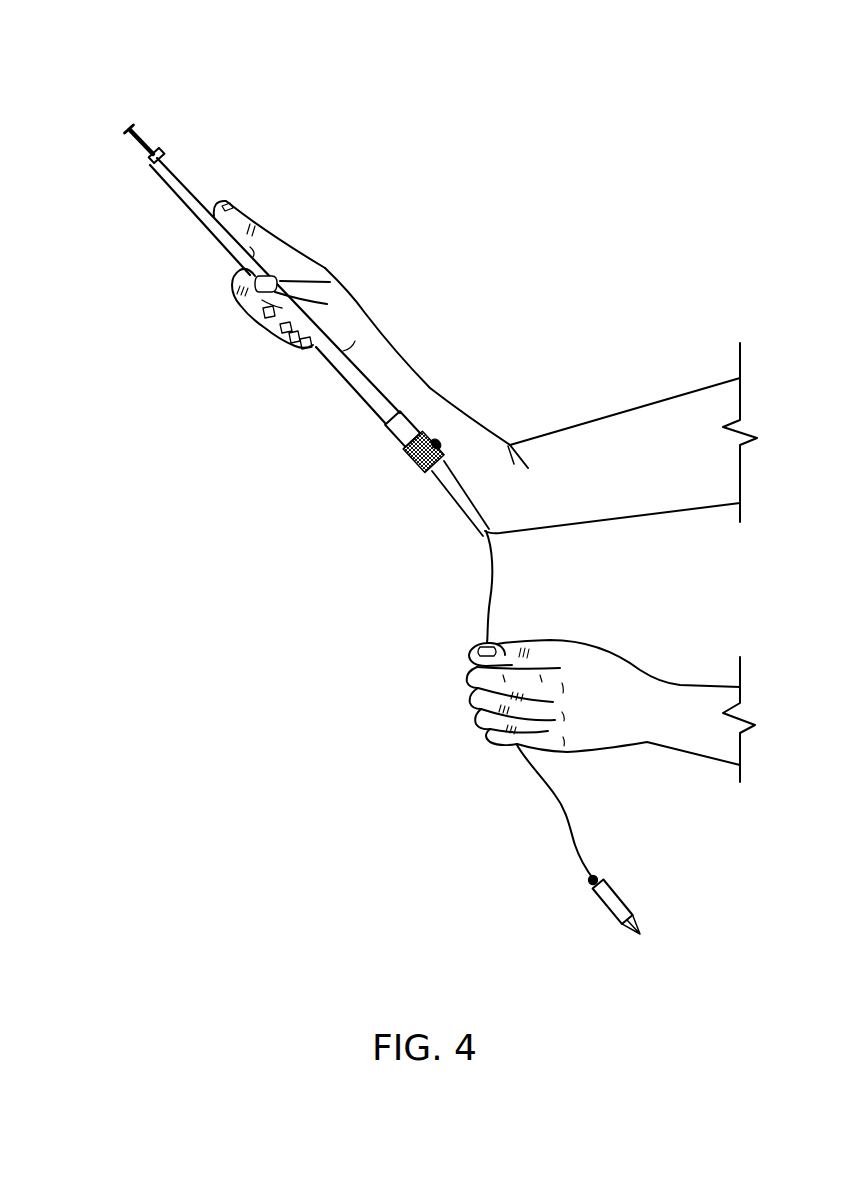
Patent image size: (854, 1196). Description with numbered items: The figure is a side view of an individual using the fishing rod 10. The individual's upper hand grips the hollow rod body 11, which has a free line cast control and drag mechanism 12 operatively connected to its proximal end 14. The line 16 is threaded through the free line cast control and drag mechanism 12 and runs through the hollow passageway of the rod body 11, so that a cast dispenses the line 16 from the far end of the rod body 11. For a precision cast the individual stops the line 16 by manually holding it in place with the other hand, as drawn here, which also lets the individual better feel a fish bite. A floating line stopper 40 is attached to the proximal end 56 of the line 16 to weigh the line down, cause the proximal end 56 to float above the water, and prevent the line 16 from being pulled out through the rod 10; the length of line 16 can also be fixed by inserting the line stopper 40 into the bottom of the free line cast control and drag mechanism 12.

The fishing rod 10 is at (124, 58).
The rod body 11 is at (180, 182).
The free line cast control and drag mechanism 12 is at (414, 462).
The proximal end 14 is at (384, 420).
The line 16 is at (487, 593).
The line stopper 40 is at (608, 912).
The proximal end 56 is at (593, 884).